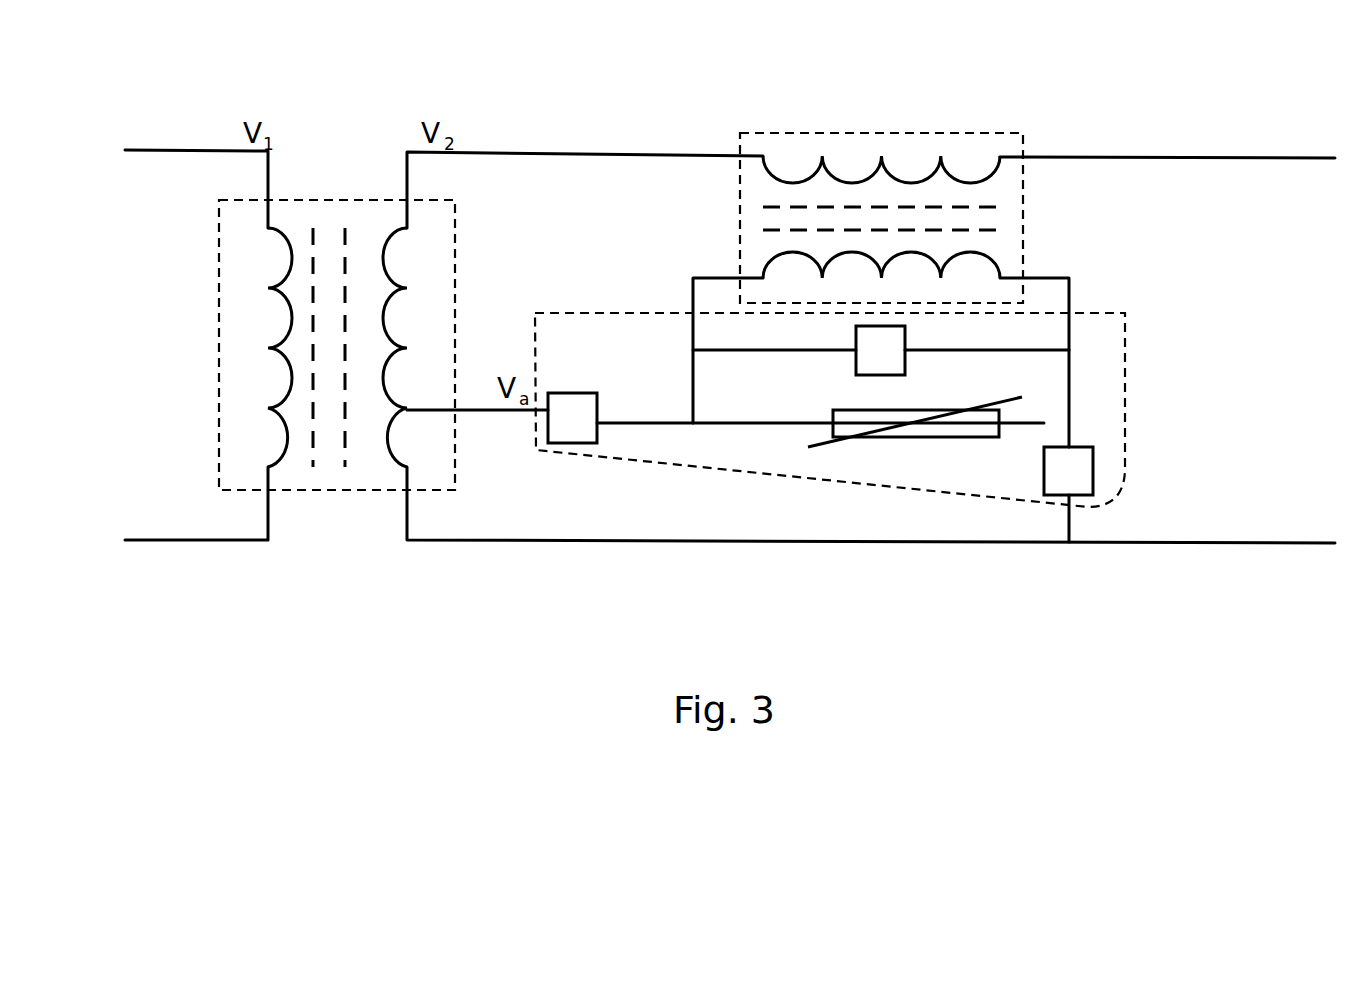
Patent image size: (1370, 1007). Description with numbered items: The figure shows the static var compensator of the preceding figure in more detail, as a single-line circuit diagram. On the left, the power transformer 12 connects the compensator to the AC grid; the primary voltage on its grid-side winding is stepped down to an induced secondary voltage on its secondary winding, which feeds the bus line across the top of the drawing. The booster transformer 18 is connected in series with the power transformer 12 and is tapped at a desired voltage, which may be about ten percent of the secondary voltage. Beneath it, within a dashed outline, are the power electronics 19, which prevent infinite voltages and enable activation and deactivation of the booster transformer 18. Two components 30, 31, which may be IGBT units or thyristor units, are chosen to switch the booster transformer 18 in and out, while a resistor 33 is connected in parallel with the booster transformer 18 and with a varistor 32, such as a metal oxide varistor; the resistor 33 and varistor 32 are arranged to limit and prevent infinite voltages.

The power transformer 12 is at (452, 236).
The booster transformer 18 is at (1008, 148).
The power electronics 19 is at (1115, 478).
The IGBT unit or thyristor unit 30 is at (550, 445).
The IGBT unit or thyristor unit 31 is at (1060, 497).
The varistor 32 is at (953, 437).
The resistor 33 is at (855, 332).